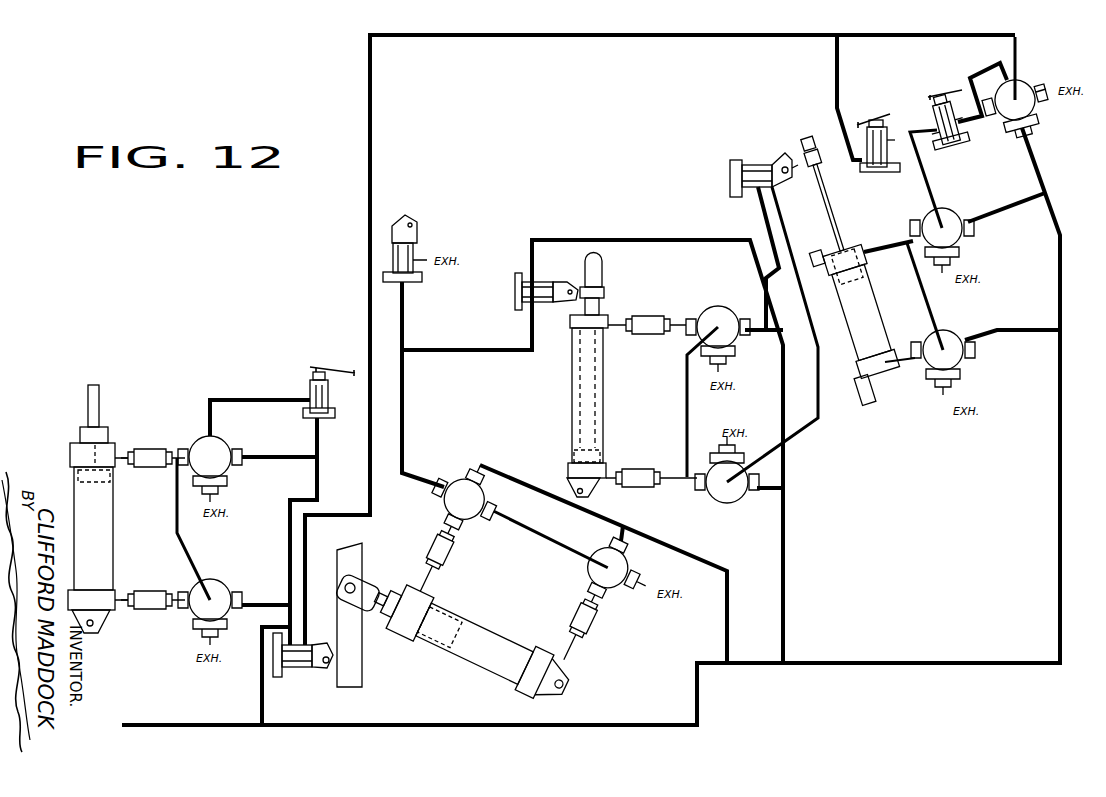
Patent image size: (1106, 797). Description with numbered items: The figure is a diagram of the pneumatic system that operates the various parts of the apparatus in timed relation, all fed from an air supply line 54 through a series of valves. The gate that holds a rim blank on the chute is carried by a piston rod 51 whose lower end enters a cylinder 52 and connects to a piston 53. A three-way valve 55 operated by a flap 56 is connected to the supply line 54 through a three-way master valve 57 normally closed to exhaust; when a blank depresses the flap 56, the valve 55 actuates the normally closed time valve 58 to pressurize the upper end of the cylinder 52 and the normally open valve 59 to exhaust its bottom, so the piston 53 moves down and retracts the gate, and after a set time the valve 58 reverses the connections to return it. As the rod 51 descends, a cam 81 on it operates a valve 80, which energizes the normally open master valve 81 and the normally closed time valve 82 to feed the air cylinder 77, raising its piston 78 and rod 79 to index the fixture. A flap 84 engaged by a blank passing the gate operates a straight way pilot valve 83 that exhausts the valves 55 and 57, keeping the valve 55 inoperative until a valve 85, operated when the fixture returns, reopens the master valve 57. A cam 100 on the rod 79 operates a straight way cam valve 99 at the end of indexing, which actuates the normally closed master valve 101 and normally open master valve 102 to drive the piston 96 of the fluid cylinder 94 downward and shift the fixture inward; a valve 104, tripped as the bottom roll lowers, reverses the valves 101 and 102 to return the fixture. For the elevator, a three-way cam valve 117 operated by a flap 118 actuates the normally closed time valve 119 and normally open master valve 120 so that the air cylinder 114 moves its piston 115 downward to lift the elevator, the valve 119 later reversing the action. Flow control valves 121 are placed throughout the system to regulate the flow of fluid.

The piston rod 51 is at (840, 231).
The cylinder 52 is at (870, 318).
The piston 53 is at (845, 282).
The air supply line 54 is at (905, 665).
The three-way valve 55 is at (960, 142).
The flap 56 is at (950, 92).
The three-way master valve 57 is at (1033, 108).
The three-way normally closed time valve 58 is at (962, 238).
The three-way normally open valve 59 is at (950, 330).
The air cylinder 77 is at (597, 412).
The piston 78 is at (592, 450).
The rod 79 is at (604, 293).
The valve 80 is at (778, 180).
The cam / three-way normally open master valve 81 is at (723, 312).
The three-way normally closed time valve 82 is at (728, 498).
The straight way pilot valve 83 is at (873, 166).
The flap 84 is at (882, 112).
The valve 85 is at (298, 657).
The fluid cylinder 94 is at (503, 645).
The piston 96 is at (443, 613).
The straight way cam valve 99 is at (515, 292).
The cam 100 is at (577, 294).
The three-way normally closed master valve 101 is at (450, 477).
The three-way normally open master valve 102 is at (614, 582).
The valve 104 is at (417, 233).
The air cylinder 114 is at (107, 548).
The piston 115 is at (100, 478).
The three-way cam valve 117 is at (327, 397).
The flap 118 is at (340, 356).
The three-way normally closed time valve 119 is at (220, 447).
The three-way normally open master valve 120 is at (218, 590).
The flow control valves 121 is at (157, 448).